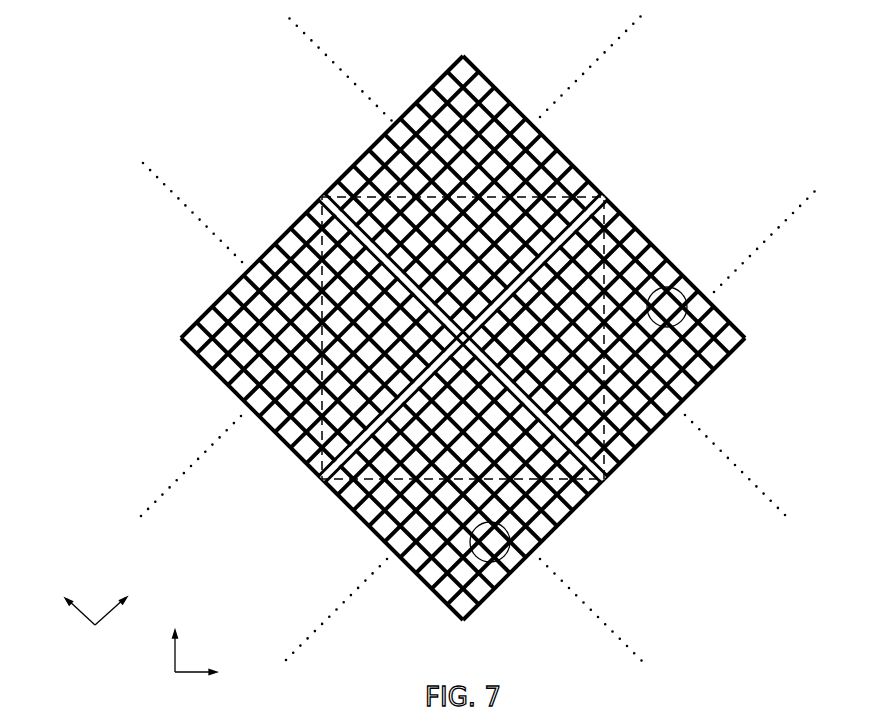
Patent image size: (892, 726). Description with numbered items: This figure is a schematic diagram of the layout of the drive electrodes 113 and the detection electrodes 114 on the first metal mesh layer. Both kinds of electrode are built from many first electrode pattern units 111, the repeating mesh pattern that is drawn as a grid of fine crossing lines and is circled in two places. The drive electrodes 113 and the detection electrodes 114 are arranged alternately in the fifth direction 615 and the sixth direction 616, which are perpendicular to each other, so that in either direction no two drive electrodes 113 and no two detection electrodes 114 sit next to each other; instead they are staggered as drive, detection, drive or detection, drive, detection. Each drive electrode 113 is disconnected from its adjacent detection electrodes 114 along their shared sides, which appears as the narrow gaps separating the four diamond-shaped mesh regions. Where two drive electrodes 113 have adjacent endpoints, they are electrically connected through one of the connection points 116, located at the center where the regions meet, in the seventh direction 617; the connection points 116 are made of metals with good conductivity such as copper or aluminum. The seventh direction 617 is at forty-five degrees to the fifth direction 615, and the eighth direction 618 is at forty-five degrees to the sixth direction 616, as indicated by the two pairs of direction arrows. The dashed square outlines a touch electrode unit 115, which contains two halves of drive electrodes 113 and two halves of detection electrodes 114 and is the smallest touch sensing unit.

The first electrode pattern unit 111 is at (668, 288).
The drive electrode 113 is at (222, 300).
The detection electrode 114 is at (502, 96).
The touch electrode unit 115 is at (581, 479).
The connection point 116 is at (469, 334).
The fifth direction 615 is at (128, 597).
The sixth direction 616 is at (62, 599).
The seventh direction 617 is at (219, 675).
The eighth direction 618 is at (175, 638).